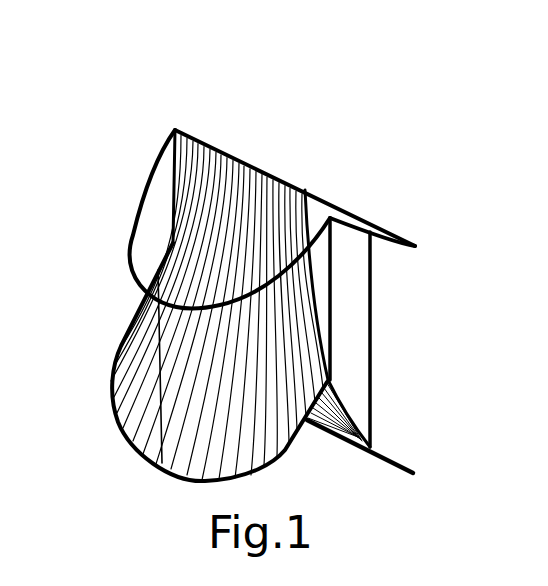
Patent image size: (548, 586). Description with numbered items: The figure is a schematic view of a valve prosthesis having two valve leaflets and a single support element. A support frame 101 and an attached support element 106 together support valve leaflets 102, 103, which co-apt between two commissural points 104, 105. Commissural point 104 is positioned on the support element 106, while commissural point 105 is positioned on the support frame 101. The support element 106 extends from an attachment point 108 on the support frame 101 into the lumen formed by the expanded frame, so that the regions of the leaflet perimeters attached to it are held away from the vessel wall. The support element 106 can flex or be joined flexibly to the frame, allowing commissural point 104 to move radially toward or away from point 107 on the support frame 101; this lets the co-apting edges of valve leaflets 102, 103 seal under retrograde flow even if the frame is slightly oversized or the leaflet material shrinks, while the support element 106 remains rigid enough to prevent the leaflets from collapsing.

The support frame 101 is at (153, 158).
The valve leaflet 102 is at (140, 408).
The valve leaflet 103 is at (337, 443).
The commissural point 104 is at (305, 188).
The commissural point 105 is at (175, 130).
The support element 106 is at (322, 279).
The point on support frame 107 is at (335, 194).
The attachment point 108 is at (332, 335).